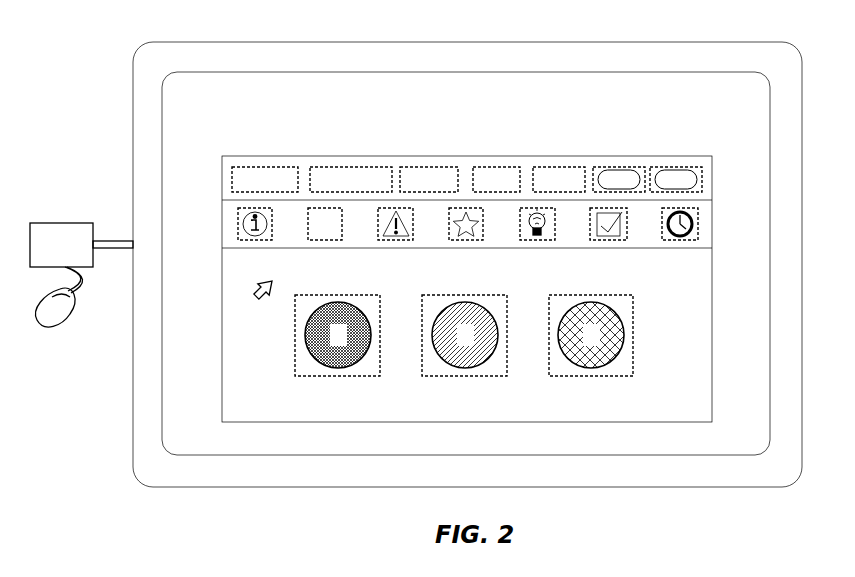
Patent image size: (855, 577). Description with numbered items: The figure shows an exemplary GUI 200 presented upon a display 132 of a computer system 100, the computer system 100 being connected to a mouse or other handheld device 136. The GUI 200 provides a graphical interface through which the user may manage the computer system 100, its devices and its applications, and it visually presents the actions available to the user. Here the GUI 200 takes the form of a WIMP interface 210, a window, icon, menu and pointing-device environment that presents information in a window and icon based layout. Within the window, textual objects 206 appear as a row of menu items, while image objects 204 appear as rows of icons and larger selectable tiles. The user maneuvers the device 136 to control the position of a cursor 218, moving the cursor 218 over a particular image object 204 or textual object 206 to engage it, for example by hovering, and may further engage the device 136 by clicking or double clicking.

The computer system 100 is at (82, 258).
The display 132 is at (237, 42).
The mouse or other handheld device 136 is at (53, 327).
The GUI 200 is at (218, 138).
The image object 204 is at (238, 230).
The textual object 206 is at (268, 167).
The WIMP interface 210 is at (268, 105).
The cursor 218 is at (255, 303).